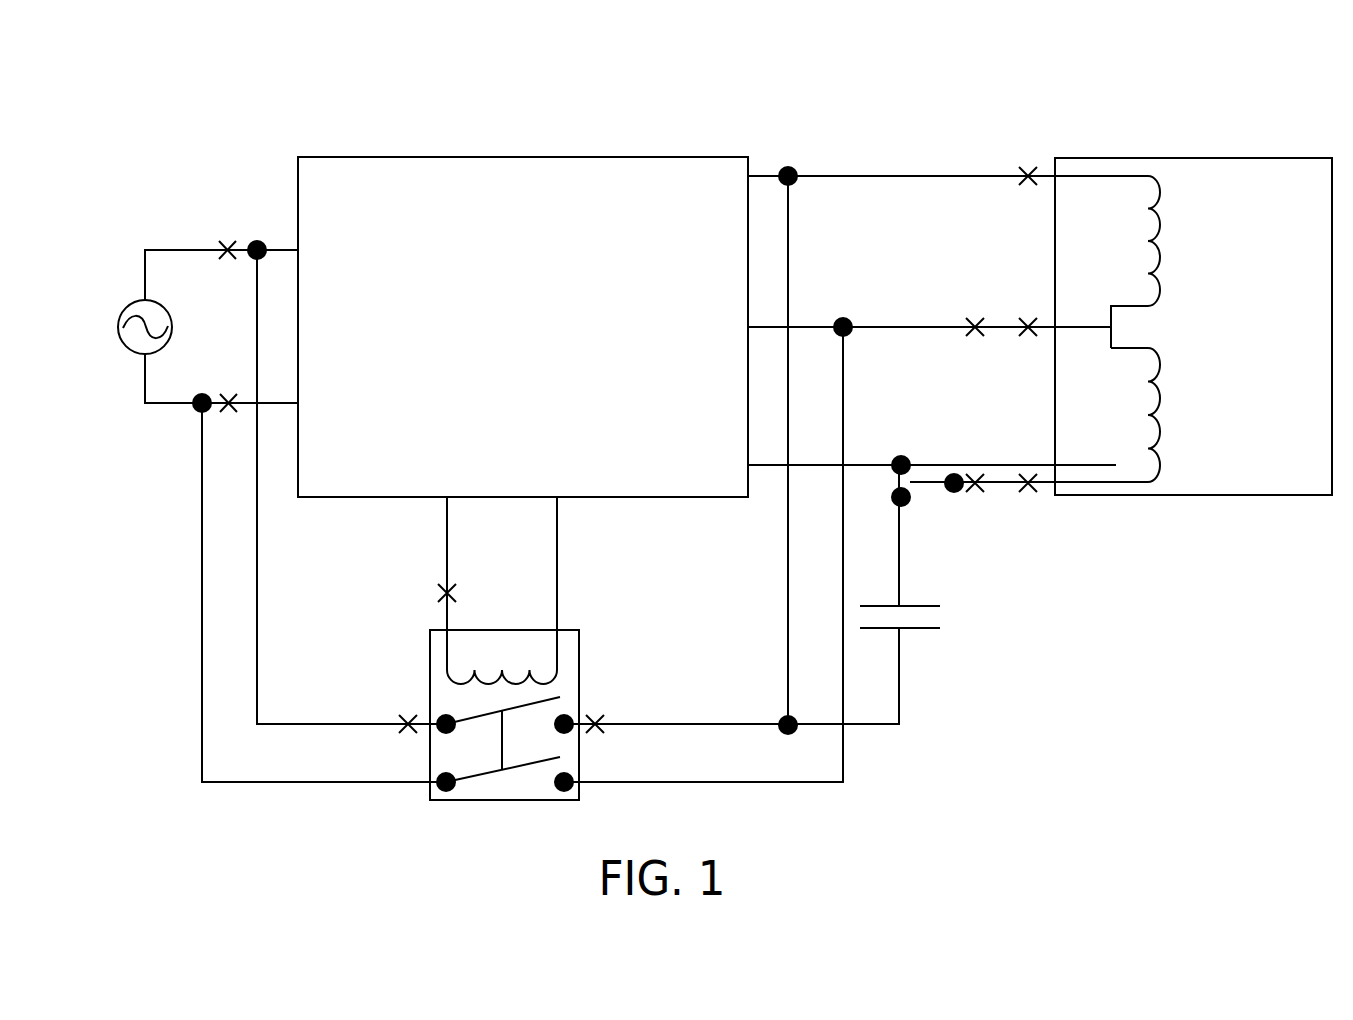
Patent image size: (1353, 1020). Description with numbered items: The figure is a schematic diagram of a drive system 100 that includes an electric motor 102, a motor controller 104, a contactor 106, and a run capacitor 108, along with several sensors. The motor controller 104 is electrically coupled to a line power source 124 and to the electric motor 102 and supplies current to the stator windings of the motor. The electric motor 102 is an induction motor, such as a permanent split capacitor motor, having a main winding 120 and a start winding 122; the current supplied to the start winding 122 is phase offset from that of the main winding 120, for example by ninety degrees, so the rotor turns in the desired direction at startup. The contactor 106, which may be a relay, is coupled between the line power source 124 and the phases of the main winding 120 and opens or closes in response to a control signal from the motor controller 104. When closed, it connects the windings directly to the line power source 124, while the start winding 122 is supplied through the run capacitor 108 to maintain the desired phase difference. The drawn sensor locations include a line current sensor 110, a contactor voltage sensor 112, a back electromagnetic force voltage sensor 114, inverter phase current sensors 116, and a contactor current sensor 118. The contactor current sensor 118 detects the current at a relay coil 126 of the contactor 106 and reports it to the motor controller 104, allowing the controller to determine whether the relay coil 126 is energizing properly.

The drive system 100 is at (260, 102).
The electric motor 102 is at (1216, 393).
The motor controller 104 is at (486, 433).
The contactor 106 is at (430, 682).
The run capacitor 108 is at (921, 606).
The line current sensor 110 is at (226, 243).
The contactor voltage sensor 112 is at (408, 722).
The back electromagnetic force (EMF) voltage sensor 114 is at (973, 318).
The inverter phase current sensors 116 is at (1028, 168).
The contactor current sensor 118 is at (440, 592).
The main winding 120 is at (1162, 170).
The start winding 122 is at (1129, 483).
The line power source 124 is at (128, 306).
The relay coil 126 is at (447, 672).